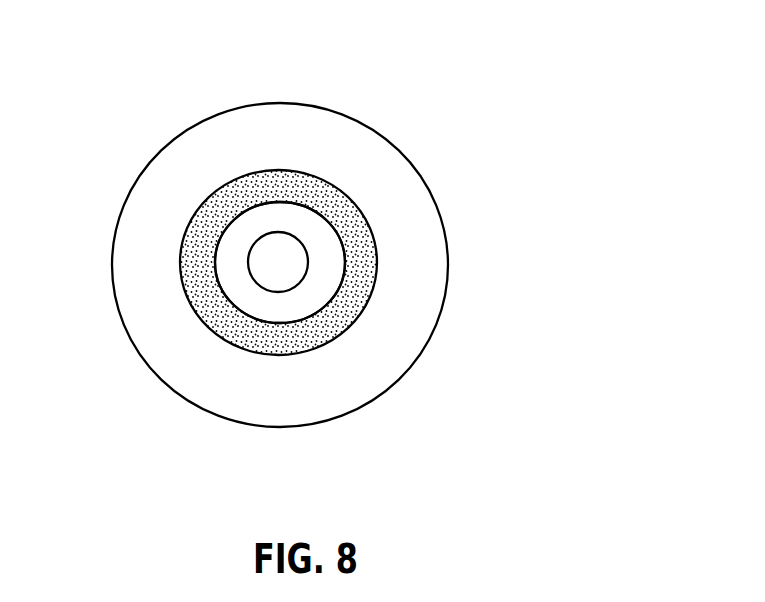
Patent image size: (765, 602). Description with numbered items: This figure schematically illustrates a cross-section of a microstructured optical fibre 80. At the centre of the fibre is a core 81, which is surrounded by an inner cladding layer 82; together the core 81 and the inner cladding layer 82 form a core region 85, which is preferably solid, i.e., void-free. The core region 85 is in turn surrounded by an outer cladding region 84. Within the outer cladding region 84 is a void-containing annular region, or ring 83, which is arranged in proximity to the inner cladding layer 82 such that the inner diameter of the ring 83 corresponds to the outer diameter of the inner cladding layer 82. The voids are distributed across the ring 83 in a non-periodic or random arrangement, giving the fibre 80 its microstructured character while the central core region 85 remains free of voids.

The microstructured optical fibre 80 is at (317, 224).
The core 81 is at (300, 255).
The inner cladding layer 82 is at (287, 305).
The void-containing annular region (ring) 83 is at (298, 185).
The outer cladding region 84 is at (165, 202).
The core region 85 is at (538, 342).